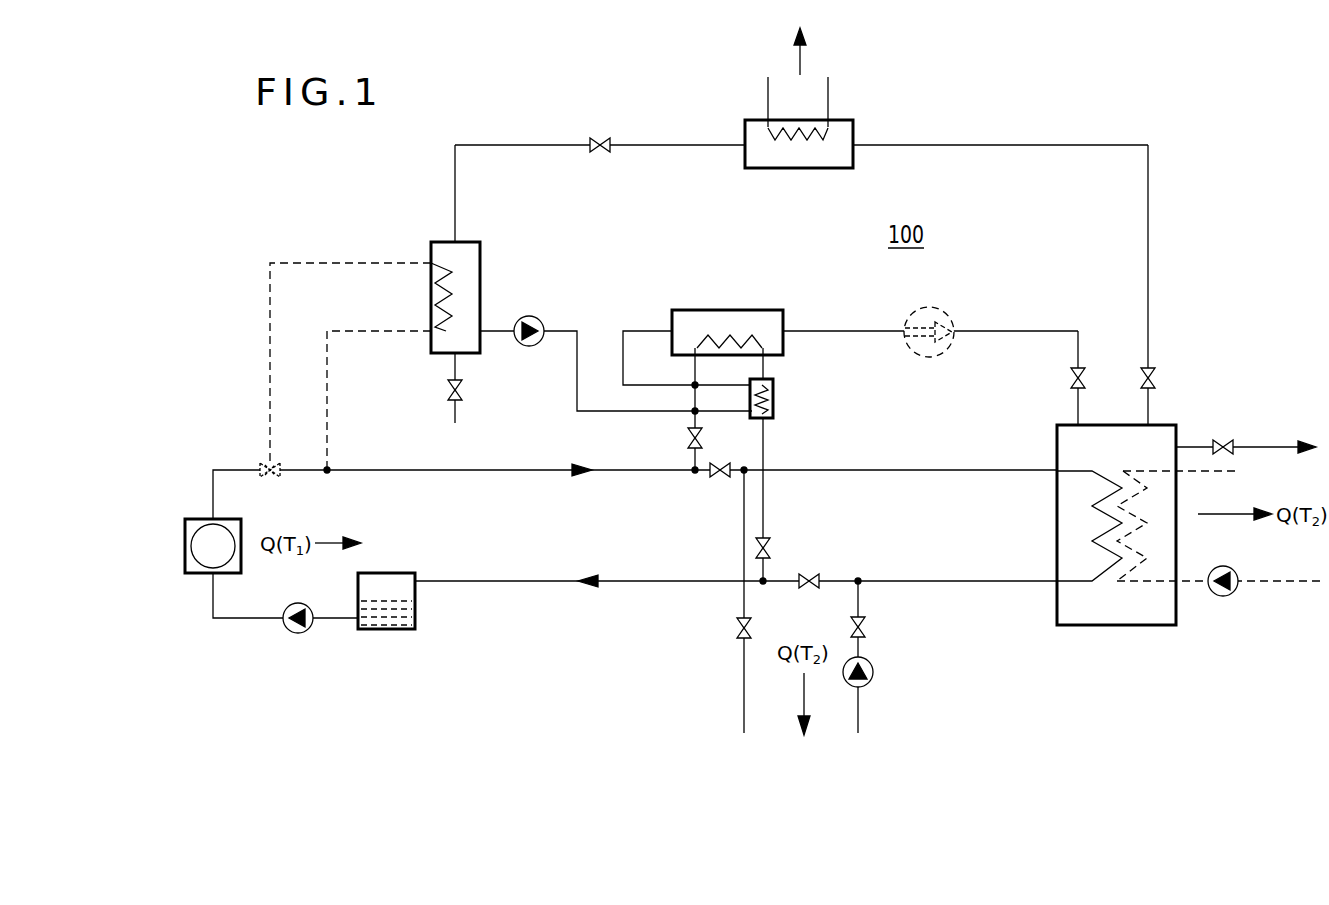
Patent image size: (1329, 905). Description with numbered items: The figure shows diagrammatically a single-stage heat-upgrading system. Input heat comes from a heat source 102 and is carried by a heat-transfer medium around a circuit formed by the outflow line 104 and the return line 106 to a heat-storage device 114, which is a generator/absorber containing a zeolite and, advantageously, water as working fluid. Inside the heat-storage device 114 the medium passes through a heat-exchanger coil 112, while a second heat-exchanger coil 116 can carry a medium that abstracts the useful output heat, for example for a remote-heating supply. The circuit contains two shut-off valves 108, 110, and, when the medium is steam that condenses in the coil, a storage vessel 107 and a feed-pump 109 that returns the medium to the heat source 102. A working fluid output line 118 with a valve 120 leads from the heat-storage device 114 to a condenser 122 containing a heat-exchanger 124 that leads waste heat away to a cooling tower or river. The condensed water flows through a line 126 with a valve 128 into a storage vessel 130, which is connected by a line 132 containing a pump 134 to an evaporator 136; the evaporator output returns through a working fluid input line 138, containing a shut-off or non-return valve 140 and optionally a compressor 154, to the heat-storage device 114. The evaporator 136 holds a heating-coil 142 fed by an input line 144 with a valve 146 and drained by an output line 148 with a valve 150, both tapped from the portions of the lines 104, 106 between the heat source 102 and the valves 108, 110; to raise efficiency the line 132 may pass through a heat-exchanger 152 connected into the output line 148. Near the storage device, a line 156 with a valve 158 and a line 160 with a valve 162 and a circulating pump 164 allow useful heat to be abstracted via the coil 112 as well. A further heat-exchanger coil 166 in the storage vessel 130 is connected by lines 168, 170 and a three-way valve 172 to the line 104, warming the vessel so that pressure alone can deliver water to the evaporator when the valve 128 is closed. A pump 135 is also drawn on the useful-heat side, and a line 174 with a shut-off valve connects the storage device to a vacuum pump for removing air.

The heat source 102 is at (189, 520).
The outflow line 104 is at (505, 468).
The return line 106 is at (522, 579).
The storage vessel 107 is at (397, 573).
The shut-off valve 108 is at (720, 476).
The feed-pump 109 is at (304, 633).
The shut-off valve 110 is at (812, 575).
The heat-exchanger coil 112 is at (1102, 575).
The heat-storage device 114 is at (1057, 440).
The heat-exchanger coil 116 is at (1140, 582).
The working fluid output line 118 is at (1150, 291).
The valve 120 is at (1155, 378).
The condenser 122 is at (853, 131).
The heat-exchanger 124 is at (810, 140).
The line 126 is at (688, 160).
The valve 128 is at (605, 140).
The storage vessel 130 is at (472, 245).
The line 132 is at (557, 328).
The pump 134 is at (527, 346).
The pump 135 is at (1228, 596).
The evaporator 136 is at (672, 312).
The working fluid input line 138 is at (1022, 330).
The shut-off valve or non-return valve 140 is at (1073, 378).
The heating-coil 142 is at (728, 340).
The input line 144 is at (694, 423).
The valve 146 is at (700, 440).
The output line 148 is at (766, 440).
The valve 150 is at (768, 548).
The heat-exchanger 152 is at (774, 388).
The compressor 154 is at (946, 314).
The line 156 is at (743, 538).
The valve 158 is at (737, 628).
The line 160 is at (860, 600).
The valve 162 is at (866, 630).
The circulating pump 164 is at (873, 668).
The heat-exchanger coil 166 is at (450, 279).
The line 168 is at (320, 260).
The line 170 is at (364, 330).
The three-way valve 172 is at (265, 462).
The line 174 is at (1268, 446).